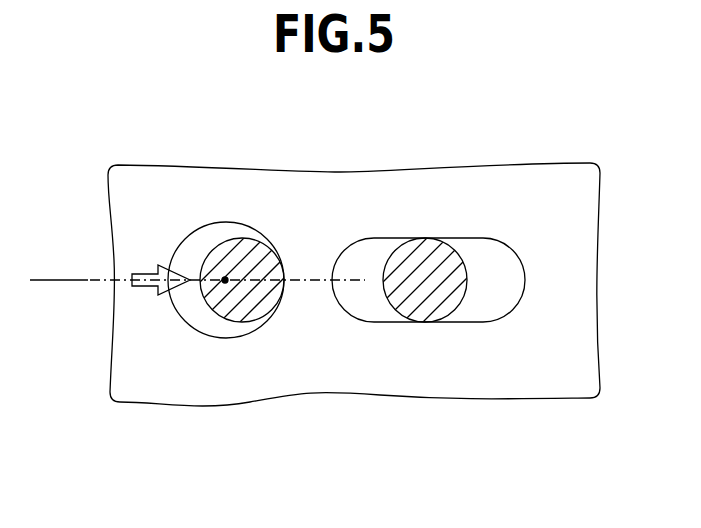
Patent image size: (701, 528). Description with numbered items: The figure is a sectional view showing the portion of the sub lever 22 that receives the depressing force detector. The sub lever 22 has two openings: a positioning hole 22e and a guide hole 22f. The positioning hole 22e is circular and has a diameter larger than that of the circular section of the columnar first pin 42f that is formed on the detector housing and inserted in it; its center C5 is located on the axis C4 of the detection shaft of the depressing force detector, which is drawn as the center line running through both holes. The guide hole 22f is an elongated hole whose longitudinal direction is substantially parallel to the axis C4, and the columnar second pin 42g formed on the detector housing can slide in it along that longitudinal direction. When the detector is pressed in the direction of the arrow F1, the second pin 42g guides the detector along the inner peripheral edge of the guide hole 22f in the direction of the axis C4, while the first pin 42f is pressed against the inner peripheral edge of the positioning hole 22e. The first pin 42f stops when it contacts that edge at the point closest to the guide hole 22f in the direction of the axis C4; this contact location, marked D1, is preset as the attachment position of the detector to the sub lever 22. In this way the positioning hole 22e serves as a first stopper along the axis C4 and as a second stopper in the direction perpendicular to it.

The sub lever 22 is at (363, 164).
The positioning hole 22e is at (213, 224).
The guide hole 22f is at (486, 239).
The first pin 42f is at (252, 296).
The second pin 42g is at (442, 293).
The axis of the detection shaft C4 is at (68, 284).
The center of the positioning hole C5 is at (224, 283).
The attachment position D1 is at (286, 277).
The direction of pressing F1 is at (147, 271).